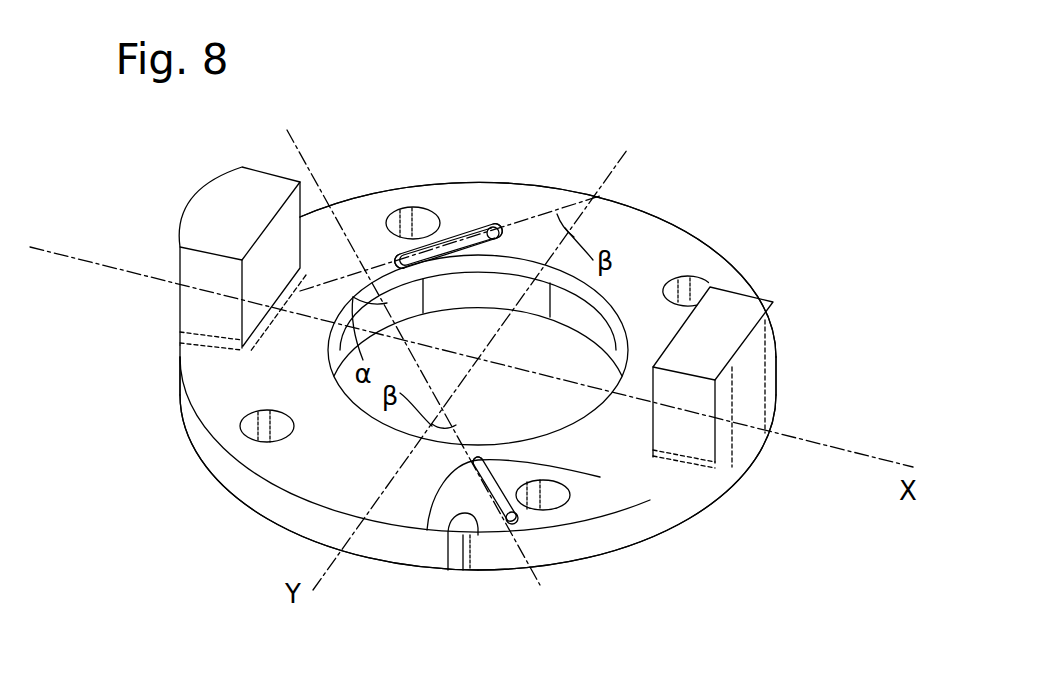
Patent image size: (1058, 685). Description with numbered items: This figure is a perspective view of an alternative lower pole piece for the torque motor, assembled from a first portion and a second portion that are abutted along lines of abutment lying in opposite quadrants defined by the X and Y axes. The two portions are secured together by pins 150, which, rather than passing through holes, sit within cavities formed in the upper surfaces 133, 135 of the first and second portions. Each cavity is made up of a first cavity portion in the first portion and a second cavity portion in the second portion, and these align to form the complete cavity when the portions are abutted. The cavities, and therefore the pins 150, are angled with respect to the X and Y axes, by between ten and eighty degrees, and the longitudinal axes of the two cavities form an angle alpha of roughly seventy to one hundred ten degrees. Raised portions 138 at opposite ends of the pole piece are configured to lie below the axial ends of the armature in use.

The upper surface 133 is at (633, 257).
The upper surface 135 is at (243, 381).
The raised portions 138 is at (233, 210).
The pins 150 is at (488, 228).